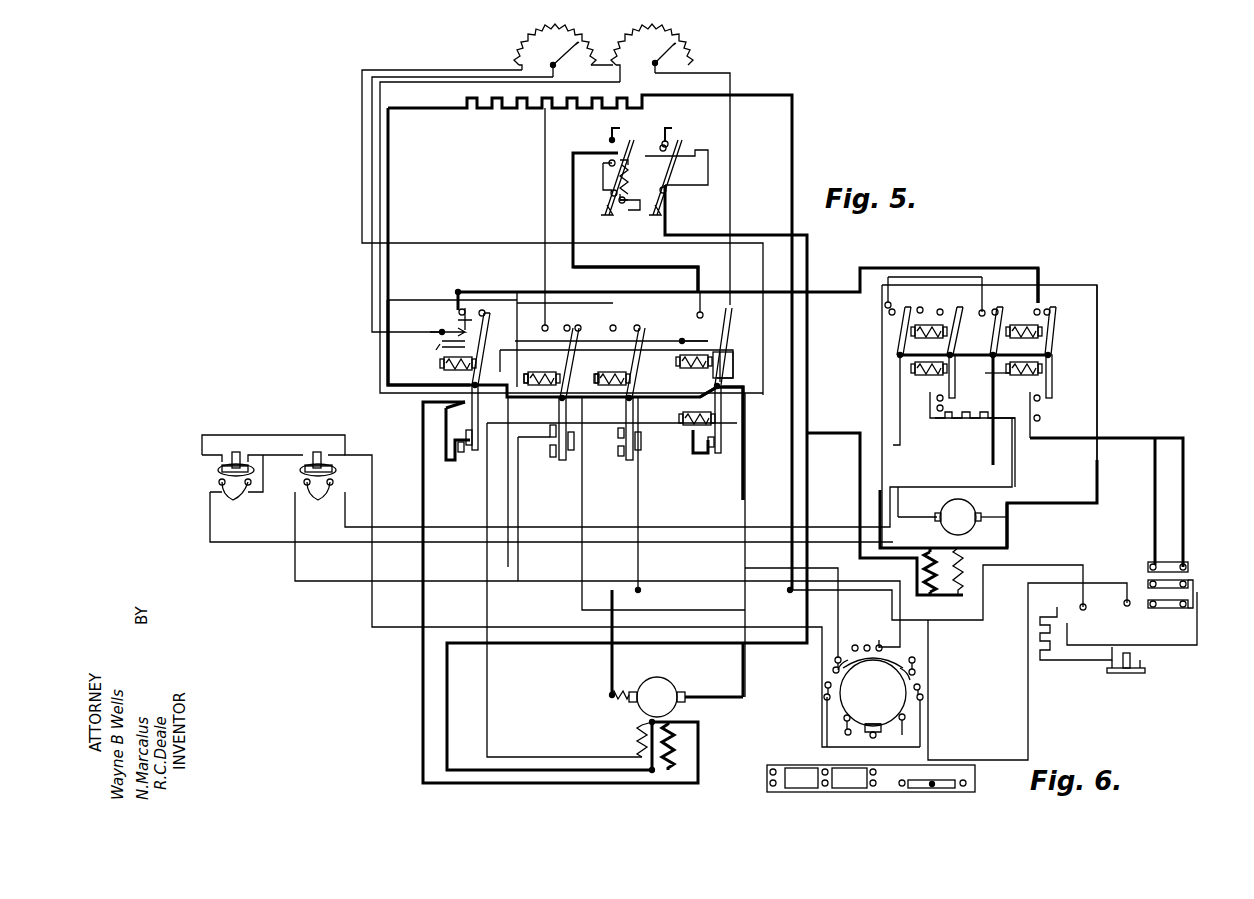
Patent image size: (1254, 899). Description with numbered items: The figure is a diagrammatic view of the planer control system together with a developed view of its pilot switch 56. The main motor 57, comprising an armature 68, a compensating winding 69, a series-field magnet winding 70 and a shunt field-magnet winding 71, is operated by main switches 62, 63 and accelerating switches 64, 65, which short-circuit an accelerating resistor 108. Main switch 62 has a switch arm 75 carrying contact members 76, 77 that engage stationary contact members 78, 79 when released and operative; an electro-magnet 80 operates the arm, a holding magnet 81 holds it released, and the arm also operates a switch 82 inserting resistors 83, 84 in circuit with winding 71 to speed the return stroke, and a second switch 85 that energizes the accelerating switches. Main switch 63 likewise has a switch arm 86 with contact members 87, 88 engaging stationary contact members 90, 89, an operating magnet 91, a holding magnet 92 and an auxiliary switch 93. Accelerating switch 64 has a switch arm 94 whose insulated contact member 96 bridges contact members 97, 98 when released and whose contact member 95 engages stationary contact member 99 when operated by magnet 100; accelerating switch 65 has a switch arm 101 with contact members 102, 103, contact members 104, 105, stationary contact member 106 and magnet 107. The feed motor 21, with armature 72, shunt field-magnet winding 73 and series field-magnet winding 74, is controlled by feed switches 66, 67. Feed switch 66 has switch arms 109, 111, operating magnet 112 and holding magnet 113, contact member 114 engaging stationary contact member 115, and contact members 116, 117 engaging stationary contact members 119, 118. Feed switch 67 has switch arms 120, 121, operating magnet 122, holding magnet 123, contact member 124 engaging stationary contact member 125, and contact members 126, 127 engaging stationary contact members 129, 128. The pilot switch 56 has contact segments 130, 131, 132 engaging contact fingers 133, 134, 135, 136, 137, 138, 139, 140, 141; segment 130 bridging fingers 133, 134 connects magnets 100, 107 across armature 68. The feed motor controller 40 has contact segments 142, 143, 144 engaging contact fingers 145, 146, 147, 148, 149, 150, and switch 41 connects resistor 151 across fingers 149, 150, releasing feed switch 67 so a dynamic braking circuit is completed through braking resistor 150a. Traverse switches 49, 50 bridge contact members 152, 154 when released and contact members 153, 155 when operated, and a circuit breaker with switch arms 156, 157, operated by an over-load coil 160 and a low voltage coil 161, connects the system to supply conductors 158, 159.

In FIG. 5, the feed motor 21 is at (1035, 496).
In FIG. 5, the feed motor controller 40 is at (1225, 628).
In FIG. 5, the switch 41 is at (1140, 675).
In FIG. 5, the traverse switch 49 is at (233, 450).
In FIG. 5, the traverse switch 50 is at (314, 450).
In FIG. 5, the pilot switch 56 is at (820, 713).
In FIG. 5, the main motor 57 is at (727, 673).
In FIG. 5, the main switch 62 is at (420, 376).
In FIG. 5, the main switch 63 is at (760, 352).
In FIG. 5, the accelerating switch 64 is at (552, 364).
In FIG. 5, the accelerating switch 65 is at (623, 364).
In FIG. 5, the feed switch 66 is at (870, 355).
In FIG. 5, the feed switch 67 is at (1085, 373).
In FIG. 5, the armature 68 is at (662, 680).
In FIG. 5, the compensating winding 69 is at (615, 690).
In FIG. 5, the series-field magnet winding 70 is at (672, 735).
In FIG. 5, the shunt field-magnet winding 71 is at (638, 735).
In FIG. 5, the armature 72 is at (940, 515).
In FIG. 5, the shunt field-magnet winding 73 is at (965, 560).
In FIG. 5, the series field-magnet winding 74 is at (938, 590).
In FIG. 5, the switch arm 75 is at (490, 340).
In FIG. 5, the contact member 76 is at (470, 450).
In FIG. 5, the contact member 77 is at (484, 310).
In FIG. 5, the stationary contact member 78 is at (460, 455).
In FIG. 5, the stationary contact member 79 is at (462, 298).
In FIG. 5, the electro-magnet 80 is at (440, 352).
In FIG. 5, the holding magnet 81 is at (442, 428).
In FIG. 5, the switch 82 is at (455, 312).
In FIG. 5, the resistor 83 is at (520, 58).
In FIG. 5, the resistor 84 is at (690, 58).
In FIG. 5, the second switch 85 is at (440, 332).
In FIG. 5, the switch arm 86 is at (728, 332).
In FIG. 5, the contact member 87 is at (728, 305).
In FIG. 5, the contact member 88 is at (712, 448).
In FIG. 5, the stationary contact member 89 is at (700, 455).
In FIG. 5, the stationary contact member 90 is at (700, 310).
In FIG. 5, the magnet 91 is at (680, 362).
In FIG. 5, the holding magnet 92 is at (682, 428).
In FIG. 5, the auxiliary switch 93 is at (688, 341).
In FIG. 5, the switch arm 94 is at (578, 326).
In FIG. 5, the contact member 95 is at (567, 326).
In FIG. 5, the contact member 96 is at (570, 450).
In FIG. 5, the contact member 97 is at (552, 440).
In FIG. 5, the contact member 98 is at (552, 455).
In FIG. 5, the stationary contact member 99 is at (545, 325).
In FIG. 5, the magnet 100 is at (525, 378).
In FIG. 5, the switch arm 101 is at (640, 330).
In FIG. 5, the contact member 102 is at (630, 326).
In FIG. 5, the contact member 103 is at (640, 450).
In FIG. 5, the contact member 104 is at (618, 433).
In FIG. 5, the contact member 105 is at (618, 450).
In FIG. 5, the stationary contact member 106 is at (615, 292).
In FIG. 5, the magnet 107 is at (584, 381).
In FIG. 5, the accelerating resistor 108 is at (508, 108).
In FIG. 5, the switch arm 109 is at (898, 330).
In FIG. 5, the switch arm 111 is at (958, 340).
In FIG. 5, the operating magnet 112 is at (920, 300).
In FIG. 5, the holding magnet 113 is at (922, 378).
In FIG. 5, the contact member 114 is at (912, 320).
In FIG. 5, the stationary contact member 115 is at (888, 312).
In FIG. 5, the contact member 116 is at (965, 312).
In FIG. 5, the contact member 117 is at (945, 398).
In FIG. 5, the stationary contact member 118 is at (938, 410).
In FIG. 5, the stationary contact member 119 is at (942, 305).
In FIG. 5, the switch arm 120 is at (1015, 305).
In FIG. 5, the switch arm 121 is at (1055, 332).
In FIG. 5, the operating magnet 122 is at (1040, 300).
In FIG. 5, the holding magnet 123 is at (1010, 370).
In FIG. 5, the contact member 124 is at (1028, 310).
In FIG. 5, the stationary contact member 125 is at (995, 305).
In FIG. 5, the contact member 126 is at (1058, 306).
In FIG. 5, the contact member 127 is at (1042, 398).
In FIG. 5, the stationary contact member 128 is at (1040, 412).
In FIG. 5, the stationary contact member 129 is at (1045, 300).
In FIG. 5, the contact segment 130 is at (848, 665).
In FIG. 6, the contact segment 130 is at (798, 788).
In FIG. 5, the contact segment 131 is at (900, 672).
In FIG. 6, the contact segment 131 is at (832, 768).
In FIG. 5, the contact segment 132 is at (876, 724).
In FIG. 6, the contact segment 132 is at (945, 780).
In FIG. 5, the contact finger 133 is at (855, 645).
In FIG. 6, the contact finger 133 is at (825, 787).
In FIG. 5, the contact finger 134 is at (867, 645).
In FIG. 6, the contact finger 134 is at (825, 772).
In FIG. 5, the contact finger 135 is at (912, 657).
In FIG. 6, the contact finger 135 is at (880, 770).
In FIG. 5, the contact finger 136 is at (922, 690).
In FIG. 6, the contact finger 136 is at (873, 787).
In FIG. 5, the contact finger 137 is at (908, 717).
In FIG. 6, the contact finger 137 is at (968, 783).
In FIG. 5, the contact finger 138 is at (880, 728).
In FIG. 6, the contact finger 138 is at (932, 788).
In FIG. 5, the contact finger 139 is at (845, 720).
In FIG. 6, the contact finger 139 is at (900, 783).
In FIG. 5, the contact finger 140 is at (825, 688).
In FIG. 6, the contact finger 140 is at (770, 784).
In FIG. 5, the contact finger 141 is at (835, 665).
In FIG. 6, the contact finger 141 is at (770, 772).
In FIG. 5, the contact segment 142 is at (1168, 560).
In FIG. 5, the contact segment 143 is at (1188, 582).
In FIG. 5, the contact segment 144 is at (1190, 603).
In FIG. 5, the contact finger 145 is at (1152, 563).
In FIG. 5, the contact finger 146 is at (1185, 563).
In FIG. 5, the contact finger 147 is at (1150, 583).
In FIG. 5, the contact finger 148 is at (1190, 586).
In FIG. 5, the contact finger 149 is at (1152, 608).
In FIG. 5, the contact finger 150 is at (1127, 605).
In FIG. 5, the braking resistor 150a is at (992, 420).
In FIG. 5, the resistor 151 is at (1045, 645).
In FIG. 5, the contact members 152 is at (218, 470).
In FIG. 5, the contact members 153 is at (234, 502).
In FIG. 5, the contact members 154 is at (305, 466).
In FIG. 5, the contact members 155 is at (318, 500).
In FIG. 5, the switch arm 156 is at (612, 175).
In FIG. 5, the switch arm 157 is at (680, 142).
In FIG. 5, the supply conductor 158 is at (607, 120).
In FIG. 5, the supply conductor 159 is at (672, 128).
In FIG. 5, the over-load coil 160 is at (635, 172).
In FIG. 5, the low voltage coil 161 is at (618, 226).